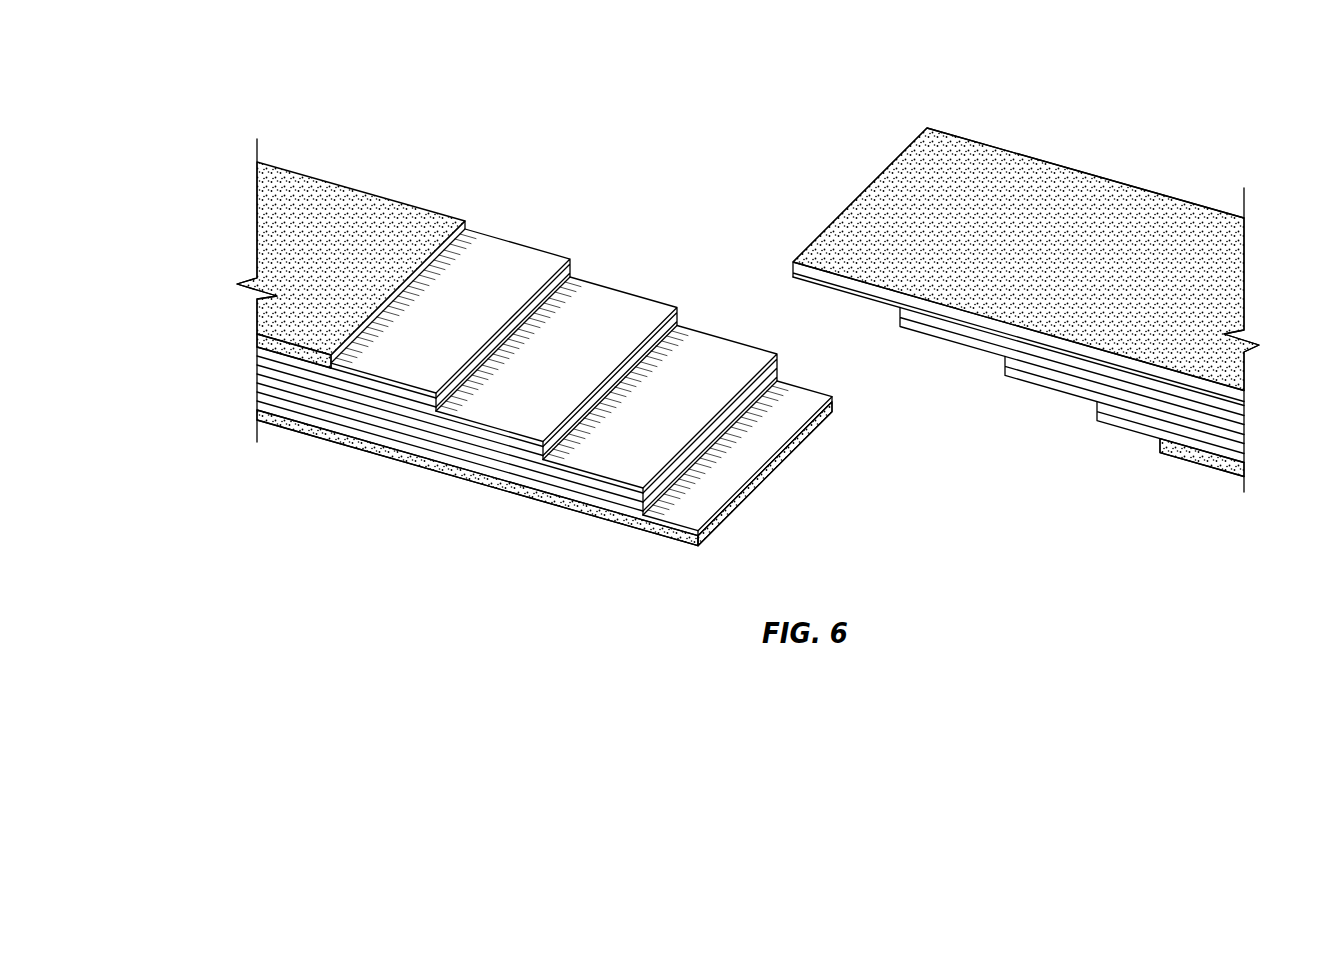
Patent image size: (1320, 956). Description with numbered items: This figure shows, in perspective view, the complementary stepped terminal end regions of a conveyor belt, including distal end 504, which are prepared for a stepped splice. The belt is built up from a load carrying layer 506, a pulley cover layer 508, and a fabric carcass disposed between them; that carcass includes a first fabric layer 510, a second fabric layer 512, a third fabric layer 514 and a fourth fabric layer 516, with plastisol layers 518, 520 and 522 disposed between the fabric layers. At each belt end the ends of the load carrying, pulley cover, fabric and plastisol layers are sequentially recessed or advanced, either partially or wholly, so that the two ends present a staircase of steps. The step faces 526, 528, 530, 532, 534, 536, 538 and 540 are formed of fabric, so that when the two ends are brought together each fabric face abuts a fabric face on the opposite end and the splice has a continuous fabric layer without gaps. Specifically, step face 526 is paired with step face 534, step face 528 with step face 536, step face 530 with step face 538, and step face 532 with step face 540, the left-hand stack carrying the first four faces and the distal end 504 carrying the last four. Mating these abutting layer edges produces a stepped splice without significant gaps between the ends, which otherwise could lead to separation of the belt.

The distal end 504 is at (1093, 146).
The load carrying layer 506 is at (672, 535).
The pulley cover layer 508 is at (343, 264).
The first fabric layer 510 is at (594, 497).
The second fabric layer 512 is at (468, 443).
The third fabric layer 514 is at (363, 393).
The fourth fabric layer 516 is at (260, 346).
The plastisol layer 518 is at (541, 473).
The plastisol layer 520 is at (415, 418).
The plastisol layer 522 is at (287, 363).
The step face 526 is at (745, 475).
The step face 528 is at (678, 429).
The step face 530 is at (586, 383).
The step face 532 is at (488, 324).
The step face 534 is at (1124, 428).
The step face 536 is at (1050, 390).
The step face 538 is at (951, 343).
The step face 540 is at (853, 295).